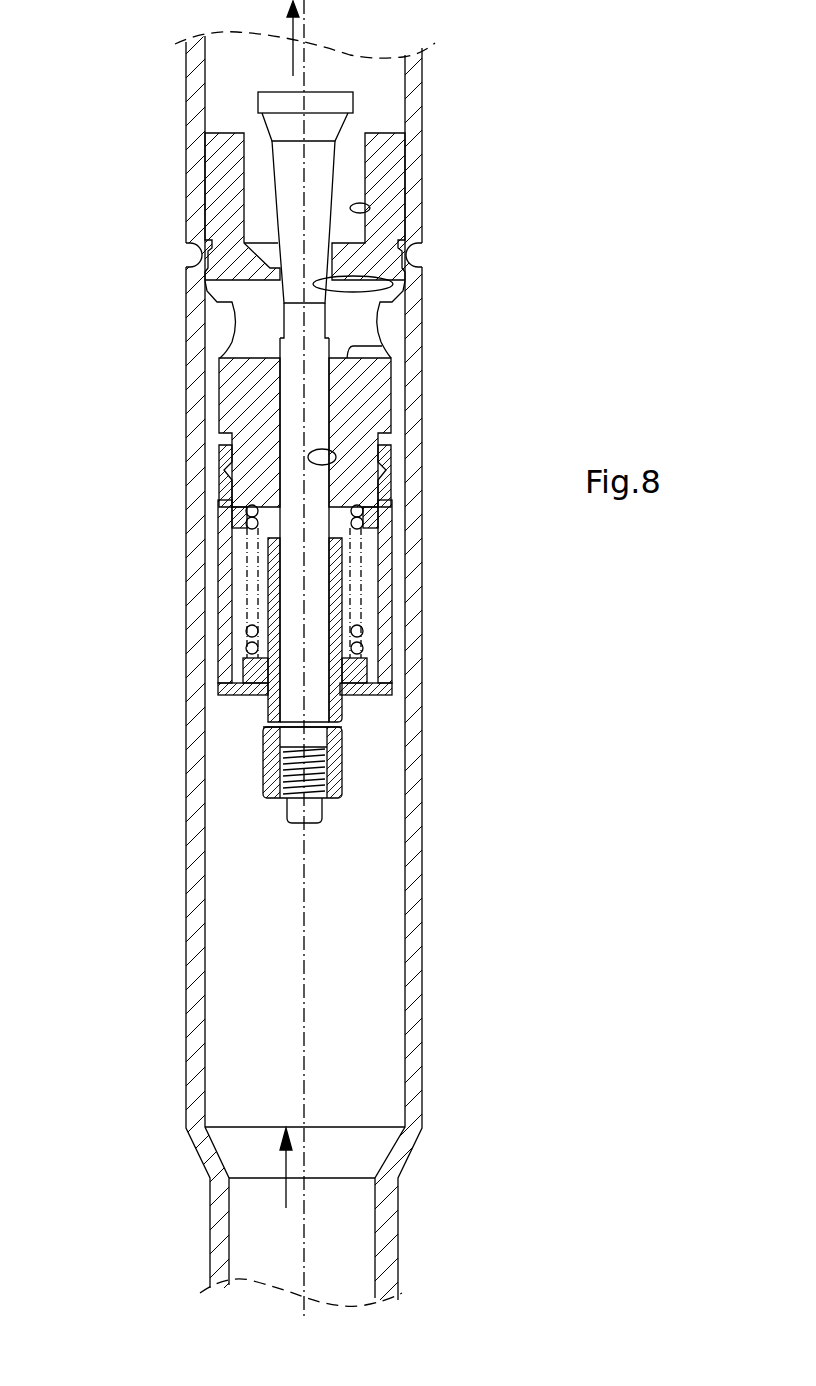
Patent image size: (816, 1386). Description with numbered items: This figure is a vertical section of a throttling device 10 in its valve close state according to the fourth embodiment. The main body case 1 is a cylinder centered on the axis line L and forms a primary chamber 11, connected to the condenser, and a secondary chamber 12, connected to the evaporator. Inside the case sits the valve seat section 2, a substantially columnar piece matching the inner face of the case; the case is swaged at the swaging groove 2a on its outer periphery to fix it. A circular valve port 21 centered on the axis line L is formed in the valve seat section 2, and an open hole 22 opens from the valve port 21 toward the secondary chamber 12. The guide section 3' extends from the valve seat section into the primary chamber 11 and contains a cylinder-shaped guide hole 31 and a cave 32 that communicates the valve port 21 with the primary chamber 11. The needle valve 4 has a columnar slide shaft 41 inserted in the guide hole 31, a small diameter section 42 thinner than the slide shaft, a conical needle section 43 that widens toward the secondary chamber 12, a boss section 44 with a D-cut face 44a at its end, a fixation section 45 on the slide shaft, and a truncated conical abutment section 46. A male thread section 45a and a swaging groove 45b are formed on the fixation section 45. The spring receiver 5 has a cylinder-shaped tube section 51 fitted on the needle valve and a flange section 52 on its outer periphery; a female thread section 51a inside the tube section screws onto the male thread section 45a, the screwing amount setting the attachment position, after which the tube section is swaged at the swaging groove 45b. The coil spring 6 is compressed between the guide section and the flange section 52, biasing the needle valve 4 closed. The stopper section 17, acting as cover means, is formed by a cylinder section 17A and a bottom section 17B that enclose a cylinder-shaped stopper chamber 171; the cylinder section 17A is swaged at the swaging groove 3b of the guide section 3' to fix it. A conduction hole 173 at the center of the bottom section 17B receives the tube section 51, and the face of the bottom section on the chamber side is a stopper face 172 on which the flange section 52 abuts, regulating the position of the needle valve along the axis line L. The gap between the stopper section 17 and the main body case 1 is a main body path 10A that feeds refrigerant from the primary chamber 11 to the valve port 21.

The throttling device 10 is at (584, 66).
The main body case 1 is at (424, 160).
The valve seat section 2 is at (422, 197).
The swaging groove 2a is at (425, 257).
The open hole 22 is at (366, 207).
The valve port 21 is at (396, 287).
The secondary chamber 12 is at (228, 98).
The D-cut face 44a is at (260, 111).
The boss section 44 is at (283, 138).
The needle section 43 is at (287, 233).
The small diameter section 42 is at (290, 327).
The needle valve 4 is at (333, 318).
The cave 32 is at (382, 346).
The guide section 3' is at (370, 432).
The guide hole 31 is at (336, 455).
The swaging groove 3b is at (386, 490).
The stopper section 17 is at (392, 557).
The cylinder section 17A is at (385, 600).
The bottom section 17B is at (236, 697).
The conduction hole 173 is at (345, 697).
The coil spring 6 is at (364, 525).
The flange section 52 is at (364, 643).
The stopper chamber 171 is at (240, 615).
The stopper face 172 is at (247, 680).
The spring receiver 5 is at (365, 666).
The slide shaft 41 is at (290, 585).
The main body path 10A is at (213, 535).
The fixation section 45 is at (258, 761).
The male thread section 45a is at (342, 762).
The swaging groove 45b is at (342, 729).
The tube section 51 is at (345, 716).
The female thread section 51a is at (350, 767).
The abutment section 46 is at (290, 813).
The primary chamber 11 is at (226, 880).
The axis line L is at (305, 983).